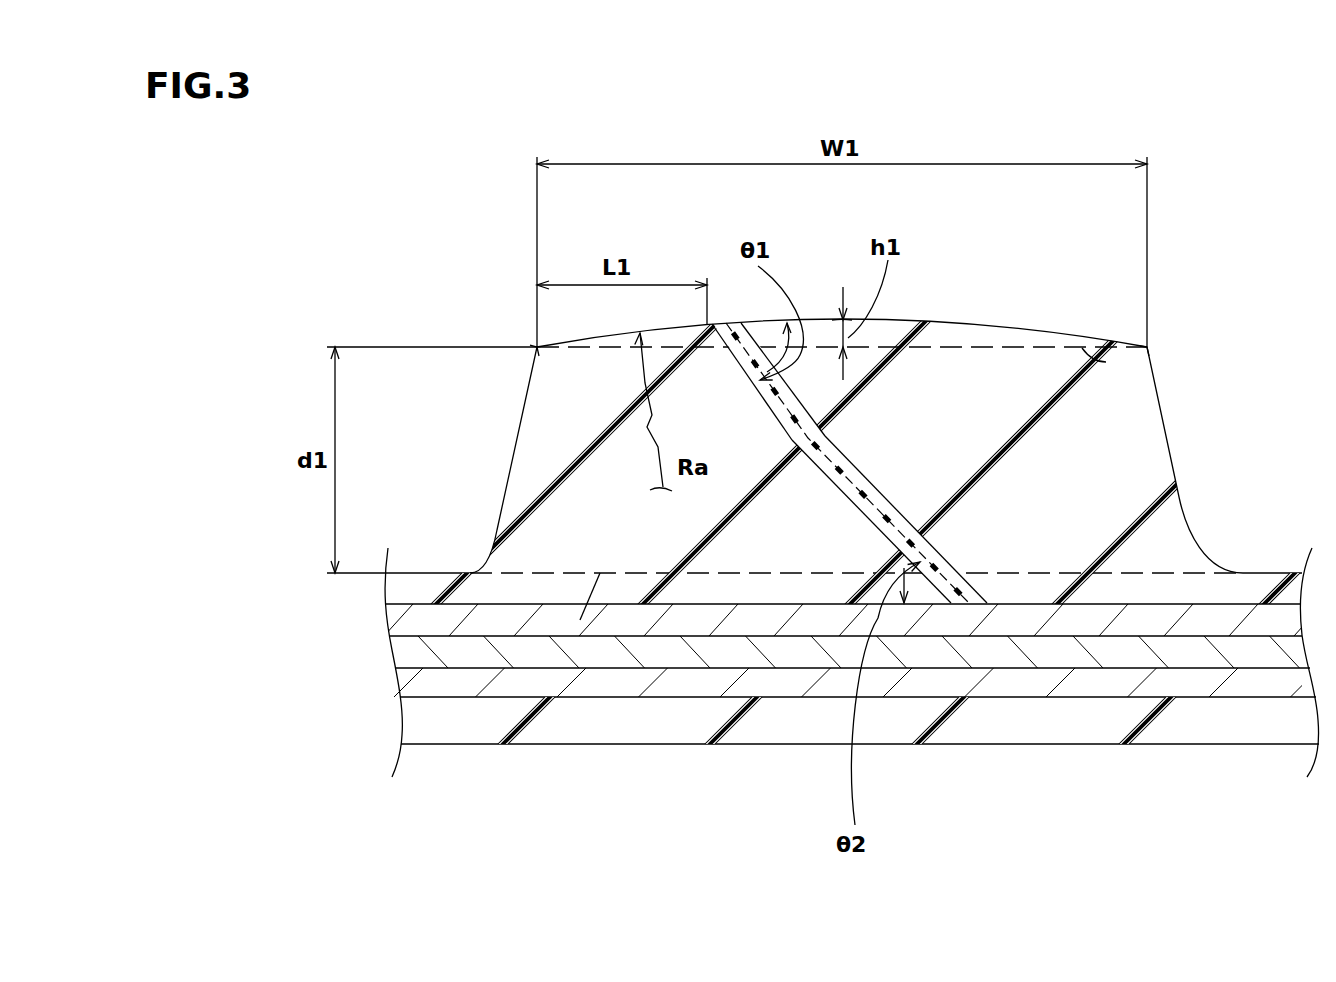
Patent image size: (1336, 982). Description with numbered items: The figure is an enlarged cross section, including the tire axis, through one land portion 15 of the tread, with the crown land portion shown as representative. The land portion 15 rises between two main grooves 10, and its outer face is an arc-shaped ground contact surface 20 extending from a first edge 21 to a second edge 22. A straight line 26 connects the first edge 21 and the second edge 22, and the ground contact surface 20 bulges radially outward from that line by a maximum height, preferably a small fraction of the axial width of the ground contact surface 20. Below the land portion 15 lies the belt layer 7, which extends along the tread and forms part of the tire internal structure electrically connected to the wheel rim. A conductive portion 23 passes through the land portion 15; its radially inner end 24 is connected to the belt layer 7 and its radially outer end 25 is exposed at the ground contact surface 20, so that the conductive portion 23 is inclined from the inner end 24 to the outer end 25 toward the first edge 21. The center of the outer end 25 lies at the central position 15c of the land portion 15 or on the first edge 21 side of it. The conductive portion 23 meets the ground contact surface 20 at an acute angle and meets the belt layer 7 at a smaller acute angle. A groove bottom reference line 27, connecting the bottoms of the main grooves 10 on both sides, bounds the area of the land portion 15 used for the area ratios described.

The belt layer 7 is at (1031, 614).
The main groove 10 is at (468, 552).
The land portion 15 is at (950, 318).
The central position of the land portion 15c is at (840, 318).
The ground contact surface 20 is at (1041, 330).
The first edge 21 is at (537, 347).
The second edge 22 is at (1148, 347).
The conductive portion 23 is at (814, 464).
The radially inner end 24 is at (948, 563).
The radially outer end 25 is at (725, 326).
The straight line 26 is at (1085, 349).
The groove bottom reference line 27 is at (580, 620).